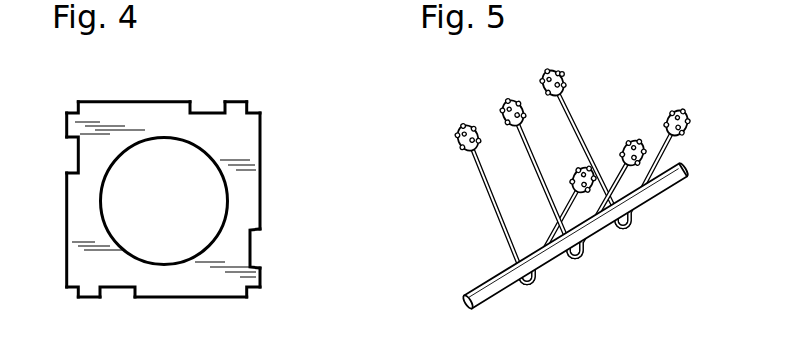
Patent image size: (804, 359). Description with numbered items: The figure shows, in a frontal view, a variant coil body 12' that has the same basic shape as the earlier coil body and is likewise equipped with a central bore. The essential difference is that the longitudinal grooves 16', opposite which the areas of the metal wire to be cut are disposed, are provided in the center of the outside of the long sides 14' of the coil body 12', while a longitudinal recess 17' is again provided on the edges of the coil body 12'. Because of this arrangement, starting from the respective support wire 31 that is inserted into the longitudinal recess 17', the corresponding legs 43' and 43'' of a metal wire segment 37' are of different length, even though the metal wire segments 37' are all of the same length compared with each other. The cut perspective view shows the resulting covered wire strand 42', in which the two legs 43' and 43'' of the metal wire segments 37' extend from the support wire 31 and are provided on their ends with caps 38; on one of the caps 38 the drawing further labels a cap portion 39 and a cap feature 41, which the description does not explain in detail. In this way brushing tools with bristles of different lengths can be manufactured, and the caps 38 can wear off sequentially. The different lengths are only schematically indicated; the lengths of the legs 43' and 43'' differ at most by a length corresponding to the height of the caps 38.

In FIG. 4, the coil body 12' is at (207, 186).
In FIG. 4, the long sides 14' is at (211, 201).
In FIG. 4, the longitudinal grooves 16' is at (174, 196).
In FIG. 4, the longitudinal recess 17' is at (177, 196).
In FIG. 5, the support wire 31 is at (675, 186).
In FIG. 5, the metal wire segments 37' is at (556, 183).
In FIG. 5, the caps 38 is at (688, 110).
In FIG. 5, the knob body 39 is at (553, 69).
In FIG. 5, the stud 41 is at (565, 81).
In FIG. 5, the covered wire strand 42' is at (438, 317).
In FIG. 5, the leg 43' is at (530, 185).
In FIG. 5, the leg 43'' is at (607, 261).